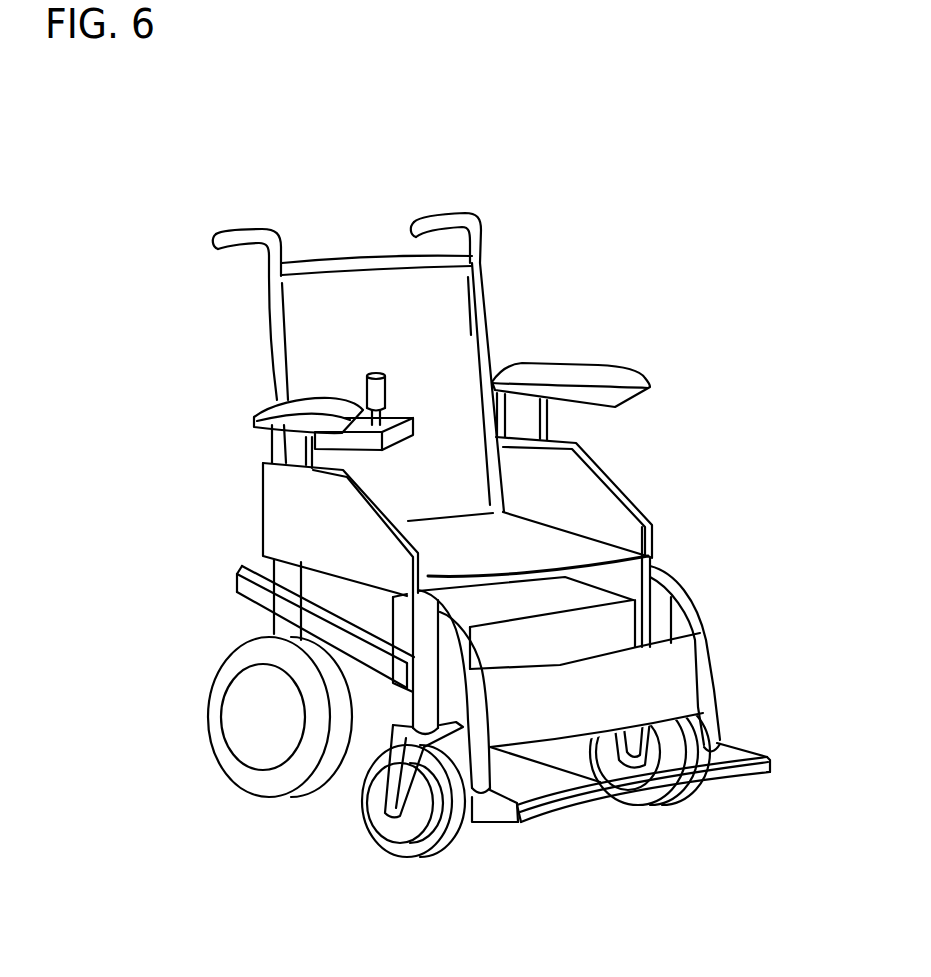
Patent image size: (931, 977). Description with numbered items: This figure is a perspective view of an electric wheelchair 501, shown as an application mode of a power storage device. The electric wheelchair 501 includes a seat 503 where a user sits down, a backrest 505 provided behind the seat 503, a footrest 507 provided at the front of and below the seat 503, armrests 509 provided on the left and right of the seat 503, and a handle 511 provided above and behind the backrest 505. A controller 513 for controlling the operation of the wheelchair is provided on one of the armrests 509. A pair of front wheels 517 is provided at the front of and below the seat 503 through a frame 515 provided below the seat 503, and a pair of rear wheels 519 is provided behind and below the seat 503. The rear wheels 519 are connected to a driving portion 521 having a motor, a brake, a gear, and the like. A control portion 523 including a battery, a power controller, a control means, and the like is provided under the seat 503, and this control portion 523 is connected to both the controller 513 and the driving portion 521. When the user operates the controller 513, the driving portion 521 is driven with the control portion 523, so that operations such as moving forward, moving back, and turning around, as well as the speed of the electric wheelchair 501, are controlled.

The electric wheelchair 501 is at (614, 225).
The seat 503 is at (565, 548).
The backrest 505 is at (432, 367).
The footrest 507 is at (578, 797).
The armrests 509 is at (607, 385).
The handle 511 is at (450, 220).
The controller 513 is at (373, 392).
The frame 515 is at (653, 620).
The front wheels 517 is at (410, 828).
The rear wheels 519 is at (260, 738).
The driving portion 521 is at (375, 713).
The control portion 523 is at (622, 632).